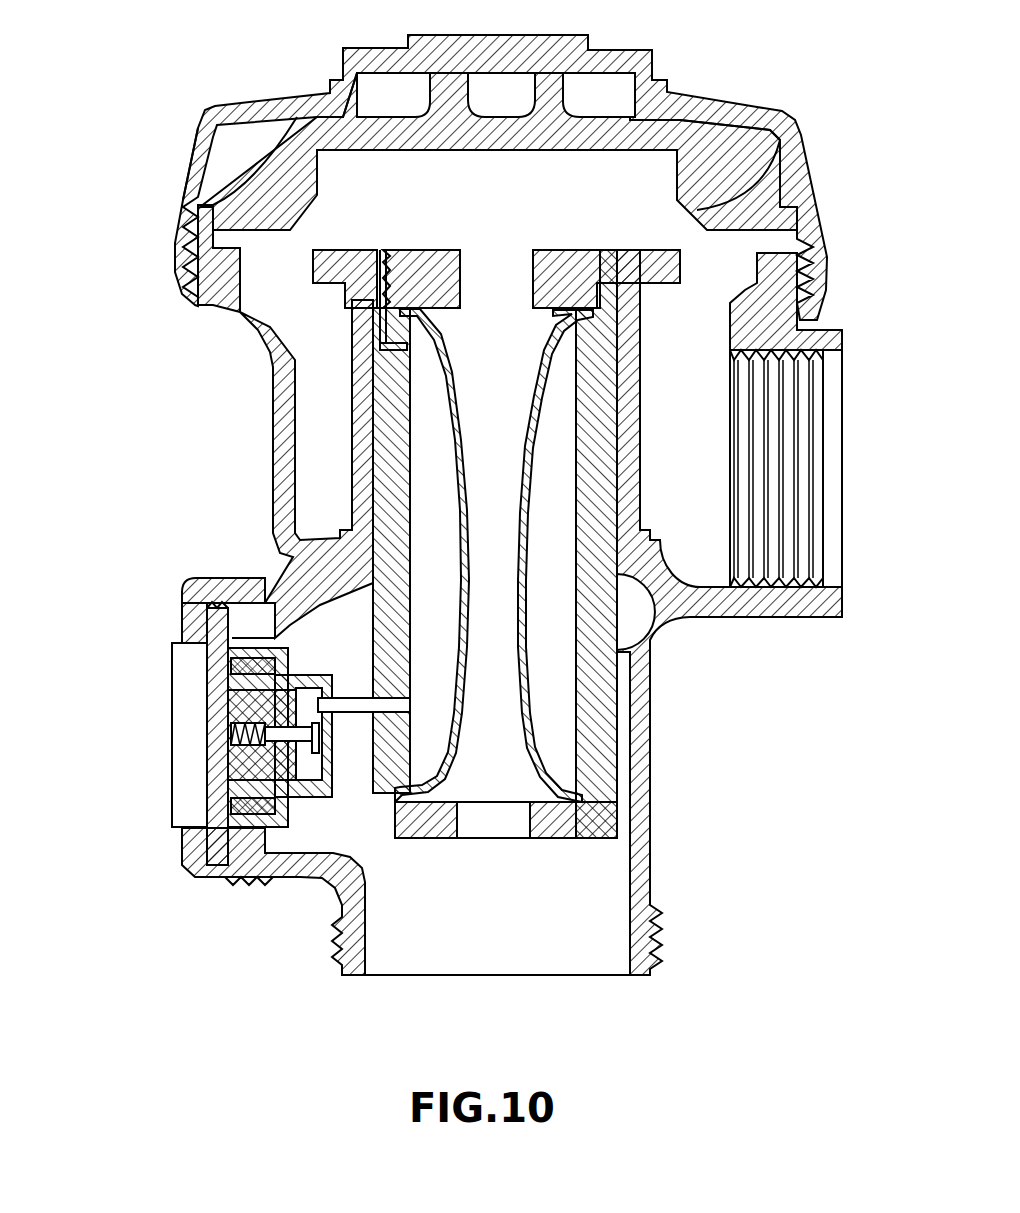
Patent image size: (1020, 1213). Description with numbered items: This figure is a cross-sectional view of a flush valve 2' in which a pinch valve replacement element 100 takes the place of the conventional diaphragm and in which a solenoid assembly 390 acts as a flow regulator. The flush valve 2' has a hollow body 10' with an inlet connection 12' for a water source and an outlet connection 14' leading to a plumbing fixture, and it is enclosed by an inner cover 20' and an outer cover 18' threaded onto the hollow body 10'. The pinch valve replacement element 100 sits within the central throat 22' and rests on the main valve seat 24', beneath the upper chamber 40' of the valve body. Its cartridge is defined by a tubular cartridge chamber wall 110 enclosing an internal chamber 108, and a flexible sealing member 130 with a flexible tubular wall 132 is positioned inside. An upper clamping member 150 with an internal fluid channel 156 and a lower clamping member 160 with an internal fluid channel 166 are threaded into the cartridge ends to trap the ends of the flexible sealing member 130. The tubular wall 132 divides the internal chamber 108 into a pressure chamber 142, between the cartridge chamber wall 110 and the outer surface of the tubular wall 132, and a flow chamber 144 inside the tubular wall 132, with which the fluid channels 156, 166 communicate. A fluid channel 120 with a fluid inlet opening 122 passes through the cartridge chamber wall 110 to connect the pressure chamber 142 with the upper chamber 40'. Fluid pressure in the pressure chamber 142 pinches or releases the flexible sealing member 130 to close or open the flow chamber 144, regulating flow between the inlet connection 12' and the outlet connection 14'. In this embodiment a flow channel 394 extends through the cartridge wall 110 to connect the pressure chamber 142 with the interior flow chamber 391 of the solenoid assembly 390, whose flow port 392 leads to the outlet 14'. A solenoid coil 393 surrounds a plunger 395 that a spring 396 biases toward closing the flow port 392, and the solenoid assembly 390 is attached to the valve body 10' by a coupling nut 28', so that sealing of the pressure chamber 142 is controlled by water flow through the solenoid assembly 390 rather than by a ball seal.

The flush valve 2' is at (212, 554).
The upper chamber 40' is at (498, 118).
The pinch valve replacement element 100 is at (615, 262).
The outer cover 18' is at (501, 177).
The inner cover 20' is at (521, 164).
The fluid inlet opening 122 is at (383, 250).
The internal fluid channel 156 is at (494, 262).
The upper clamping member 150 is at (583, 250).
The main valve seat 24' is at (753, 301).
The fluid channel 120 is at (353, 322).
The pressure chamber 142 is at (427, 350).
The flow chamber 144 is at (490, 372).
The central throat 22' is at (285, 421).
The inlet connection 12' is at (815, 468).
The cartridge chamber wall 110 is at (590, 603).
The internal chamber 108 is at (590, 640).
The flexible sealing member 130 is at (498, 600).
The flexible tubular wall 132 is at (528, 707).
The hollow body 10' is at (512, 612).
The lower clamping member 160 is at (555, 813).
The internal fluid channel 166 is at (494, 817).
The outlet connection 14' is at (596, 997).
The flow channel 394 is at (350, 690).
The plunger 395 is at (225, 680).
The spring 396 is at (220, 728).
The solenoid assembly 390 is at (222, 790).
The interior flow chamber 391 is at (312, 770).
The flow port 392 is at (335, 745).
The solenoid coil 393 is at (240, 865).
The coupling nut 28' is at (169, 888).